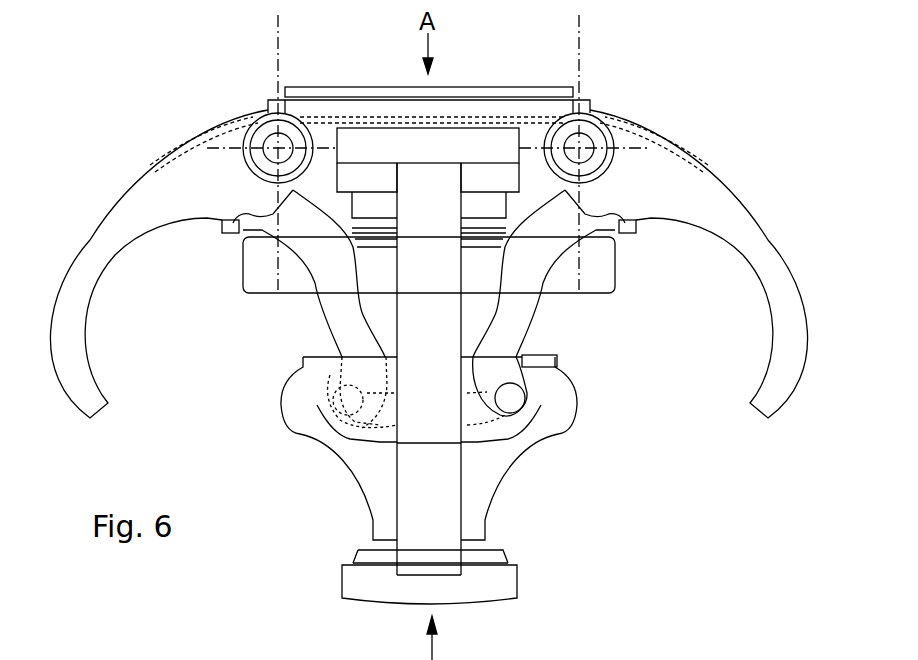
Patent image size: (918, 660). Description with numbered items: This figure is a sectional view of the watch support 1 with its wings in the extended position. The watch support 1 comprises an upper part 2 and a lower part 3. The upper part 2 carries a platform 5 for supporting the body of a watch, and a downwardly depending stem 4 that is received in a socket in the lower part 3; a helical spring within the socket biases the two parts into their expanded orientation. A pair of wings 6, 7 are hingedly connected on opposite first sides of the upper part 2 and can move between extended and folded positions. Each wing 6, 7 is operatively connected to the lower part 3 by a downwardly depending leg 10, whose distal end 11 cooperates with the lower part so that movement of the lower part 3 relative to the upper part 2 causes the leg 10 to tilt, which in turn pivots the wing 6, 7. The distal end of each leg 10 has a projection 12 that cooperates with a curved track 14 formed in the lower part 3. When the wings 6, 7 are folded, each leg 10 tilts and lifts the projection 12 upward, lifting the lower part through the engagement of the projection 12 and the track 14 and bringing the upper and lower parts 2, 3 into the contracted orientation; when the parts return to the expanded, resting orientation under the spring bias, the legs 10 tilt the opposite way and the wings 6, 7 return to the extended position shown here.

The watch support 1 is at (640, 88).
The upper part 2 is at (490, 87).
The lower part 3 is at (494, 494).
The stem 4 is at (432, 294).
The platform 5 is at (293, 87).
The wing 6 is at (73, 313).
The wing 7 is at (778, 252).
The leg 10 is at (345, 320).
The distal end 11 is at (497, 373).
The projection 12 is at (512, 398).
The curved track 14 is at (382, 412).